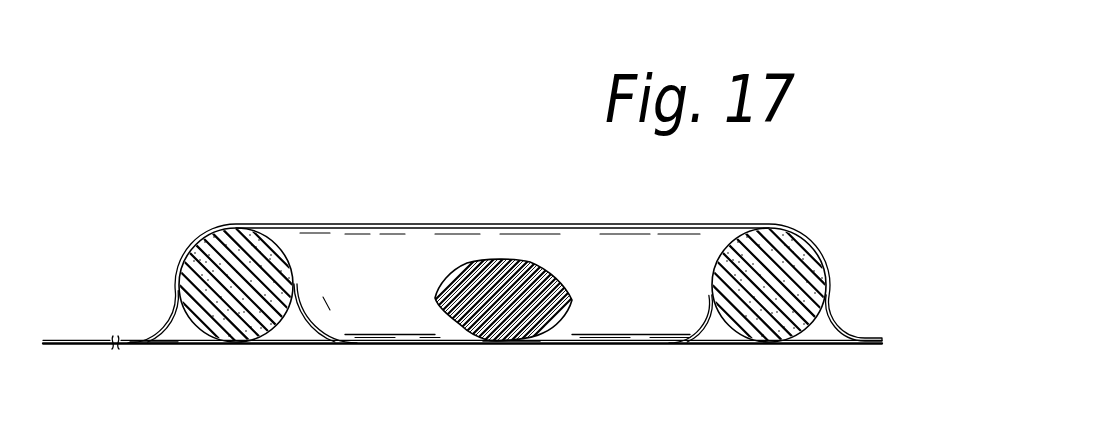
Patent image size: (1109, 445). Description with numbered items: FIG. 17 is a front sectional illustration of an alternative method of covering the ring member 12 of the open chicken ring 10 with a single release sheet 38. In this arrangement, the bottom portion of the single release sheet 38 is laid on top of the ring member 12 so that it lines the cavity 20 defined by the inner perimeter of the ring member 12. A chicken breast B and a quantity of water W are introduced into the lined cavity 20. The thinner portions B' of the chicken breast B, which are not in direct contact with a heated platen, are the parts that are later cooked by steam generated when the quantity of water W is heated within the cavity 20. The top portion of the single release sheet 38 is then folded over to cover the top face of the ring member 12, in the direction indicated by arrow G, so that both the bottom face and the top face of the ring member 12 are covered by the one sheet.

The open chicken ring 10 is at (201, 227).
The cavity 20 is at (318, 262).
The ring member 12 is at (197, 314).
The single release sheet 38 is at (88, 346).
The chicken breast B is at (502, 300).
The thinner portions of chicken breast B' is at (518, 351).
The quantity of water W is at (540, 342).
The arrow G is at (553, 206).